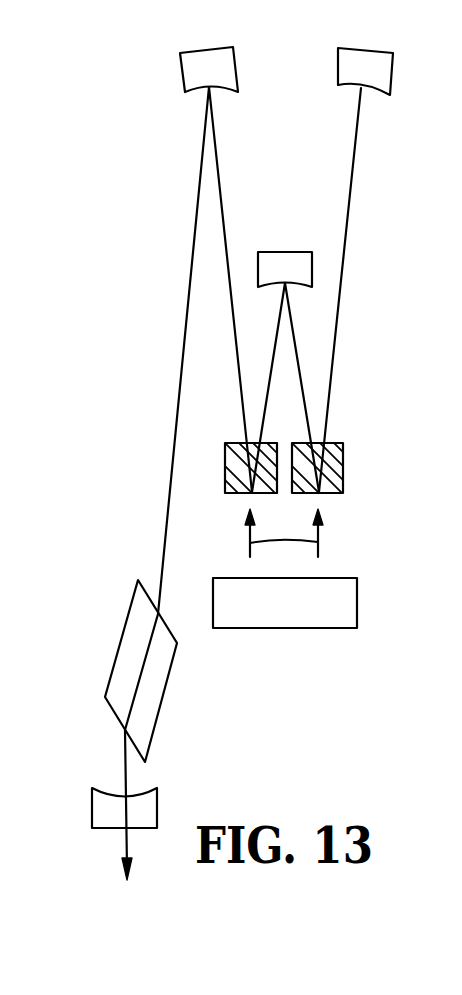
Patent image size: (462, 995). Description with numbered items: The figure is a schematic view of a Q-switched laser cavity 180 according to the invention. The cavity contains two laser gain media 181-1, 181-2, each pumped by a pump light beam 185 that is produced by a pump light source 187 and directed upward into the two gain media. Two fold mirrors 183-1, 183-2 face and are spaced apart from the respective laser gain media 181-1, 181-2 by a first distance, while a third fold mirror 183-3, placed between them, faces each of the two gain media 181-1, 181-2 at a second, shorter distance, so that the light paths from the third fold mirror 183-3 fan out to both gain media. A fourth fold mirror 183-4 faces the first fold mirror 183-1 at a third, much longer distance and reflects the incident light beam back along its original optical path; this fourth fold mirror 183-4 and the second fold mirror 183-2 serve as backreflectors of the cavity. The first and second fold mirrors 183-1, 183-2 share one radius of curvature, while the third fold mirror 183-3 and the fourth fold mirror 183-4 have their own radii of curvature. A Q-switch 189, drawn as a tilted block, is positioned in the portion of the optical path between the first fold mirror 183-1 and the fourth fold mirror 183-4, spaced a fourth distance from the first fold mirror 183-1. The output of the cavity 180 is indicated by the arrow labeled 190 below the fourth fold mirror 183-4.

The Q-switched laser cavity 180 is at (274, 86).
The laser gain medium 181-1 is at (227, 483).
The laser gain medium 181-2 is at (333, 440).
The first fold mirror 183-1 is at (185, 73).
The second fold mirror 183-2 is at (338, 73).
The third fold mirror 183-3 is at (288, 250).
The fourth fold mirror 183-4 is at (157, 797).
The pump light beam 185 is at (318, 552).
The pump light source 187 is at (317, 628).
The Q-switch 189 is at (131, 640).
The output beam 190 is at (120, 843).